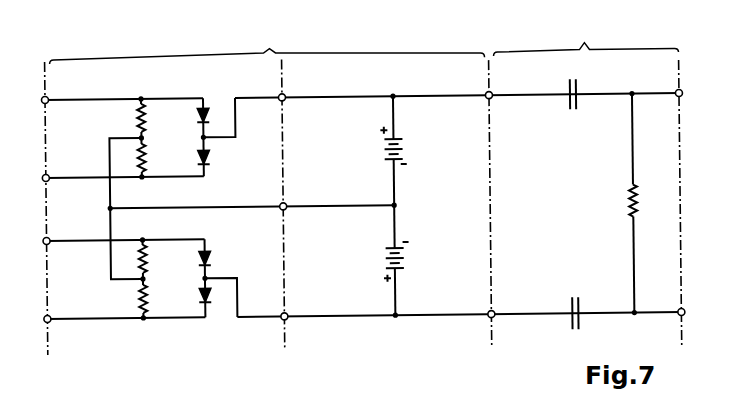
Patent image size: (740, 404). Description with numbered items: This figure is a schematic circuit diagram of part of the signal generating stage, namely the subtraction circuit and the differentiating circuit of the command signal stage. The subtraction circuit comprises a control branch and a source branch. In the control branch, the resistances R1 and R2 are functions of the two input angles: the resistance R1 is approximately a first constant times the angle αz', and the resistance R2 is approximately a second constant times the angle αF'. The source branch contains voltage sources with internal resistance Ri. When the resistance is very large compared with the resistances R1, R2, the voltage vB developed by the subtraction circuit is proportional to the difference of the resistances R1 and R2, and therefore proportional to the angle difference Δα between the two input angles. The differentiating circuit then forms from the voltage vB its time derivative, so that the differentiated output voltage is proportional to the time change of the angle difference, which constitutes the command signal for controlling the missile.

The resistance R1 is at (289, 155).
The resistance R2 is at (289, 265).
The internal resistance Ri is at (402, 203).
The voltage vB VB is at (518, 108).